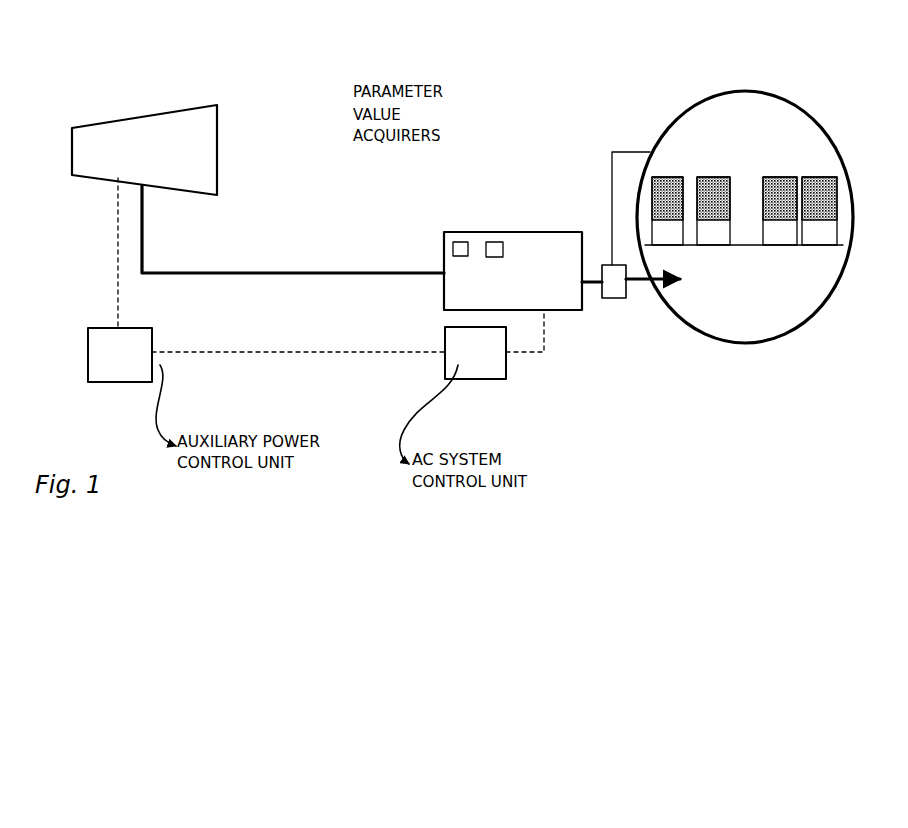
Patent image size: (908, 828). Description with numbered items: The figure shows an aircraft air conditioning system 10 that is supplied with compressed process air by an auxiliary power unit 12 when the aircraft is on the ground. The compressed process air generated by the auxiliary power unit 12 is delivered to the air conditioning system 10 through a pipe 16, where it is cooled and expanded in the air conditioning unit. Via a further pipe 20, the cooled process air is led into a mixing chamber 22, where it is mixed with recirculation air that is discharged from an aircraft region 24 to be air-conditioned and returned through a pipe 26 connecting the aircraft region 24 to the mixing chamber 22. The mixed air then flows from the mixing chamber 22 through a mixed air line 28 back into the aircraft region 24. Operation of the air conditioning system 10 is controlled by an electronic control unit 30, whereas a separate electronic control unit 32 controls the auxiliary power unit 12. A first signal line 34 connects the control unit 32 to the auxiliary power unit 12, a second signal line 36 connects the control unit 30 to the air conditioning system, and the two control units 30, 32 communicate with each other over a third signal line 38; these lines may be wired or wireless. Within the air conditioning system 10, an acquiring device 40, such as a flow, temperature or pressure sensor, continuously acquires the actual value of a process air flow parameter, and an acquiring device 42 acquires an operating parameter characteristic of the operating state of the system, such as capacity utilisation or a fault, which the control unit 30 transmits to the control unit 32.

The aircraft air conditioning system 10 is at (525, 148).
The auxiliary power unit 12 is at (168, 129).
The pipe 16 is at (210, 270).
The further pipe 20 is at (592, 287).
The mixing chamber 22 is at (615, 293).
The aircraft region to be air-conditioned 24 is at (755, 114).
The pipe 26 is at (620, 150).
The mixed air line 28 is at (650, 290).
The electronic control unit 30 is at (485, 378).
The electronic control unit 32 is at (118, 383).
The first signal line 34 is at (116, 221).
The second signal line 36 is at (540, 357).
The third signal line 38 is at (308, 357).
The acquiring device 40 is at (447, 137).
The acquiring device 42 is at (447, 137).